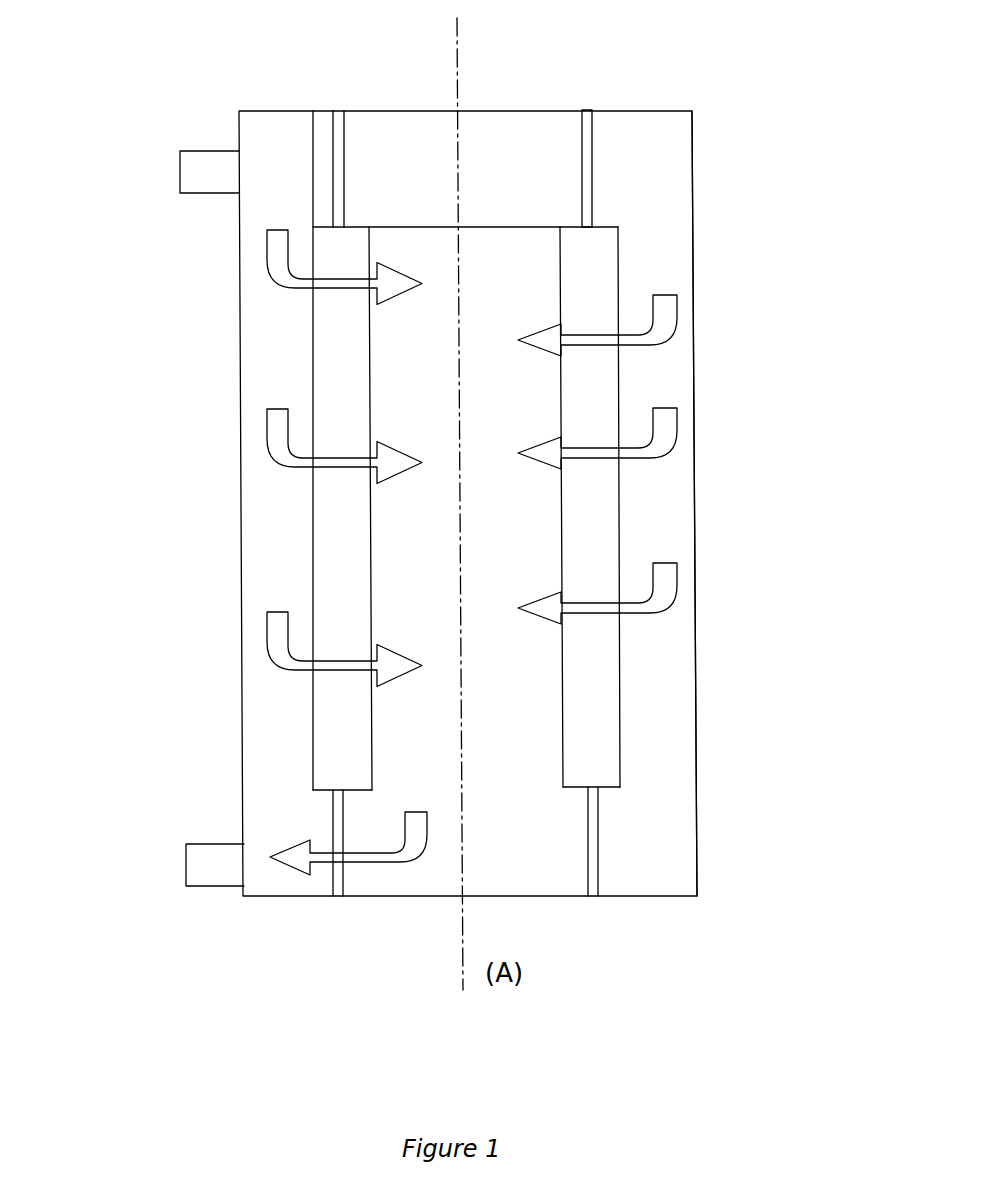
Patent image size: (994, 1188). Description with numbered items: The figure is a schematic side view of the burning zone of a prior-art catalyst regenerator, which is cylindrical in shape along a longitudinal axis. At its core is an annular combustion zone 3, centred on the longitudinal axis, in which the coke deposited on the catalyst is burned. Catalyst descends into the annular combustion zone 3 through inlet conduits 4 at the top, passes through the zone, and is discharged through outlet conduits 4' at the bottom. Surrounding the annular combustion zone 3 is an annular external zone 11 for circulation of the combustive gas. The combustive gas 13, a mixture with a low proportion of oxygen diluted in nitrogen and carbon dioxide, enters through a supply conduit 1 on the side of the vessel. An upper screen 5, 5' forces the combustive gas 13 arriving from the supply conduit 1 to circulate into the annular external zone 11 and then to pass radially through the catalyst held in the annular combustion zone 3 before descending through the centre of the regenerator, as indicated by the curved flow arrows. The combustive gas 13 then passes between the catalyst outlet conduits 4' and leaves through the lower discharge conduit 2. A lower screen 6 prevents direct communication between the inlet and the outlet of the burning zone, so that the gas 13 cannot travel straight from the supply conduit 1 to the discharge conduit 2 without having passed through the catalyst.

The supply conduit 1 is at (178, 139).
The lower discharge conduit 2 is at (206, 853).
The annular combustion zone 3 is at (602, 312).
The inlet conduits 4 is at (673, 157).
The outlet conduits 4' is at (682, 830).
The upper screen 5 is at (465, 417).
The upper screen 5' is at (349, 470).
The lower screen 6 is at (670, 777).
The annular external zone 11 is at (667, 531).
The combustive gas 13 is at (266, 282).